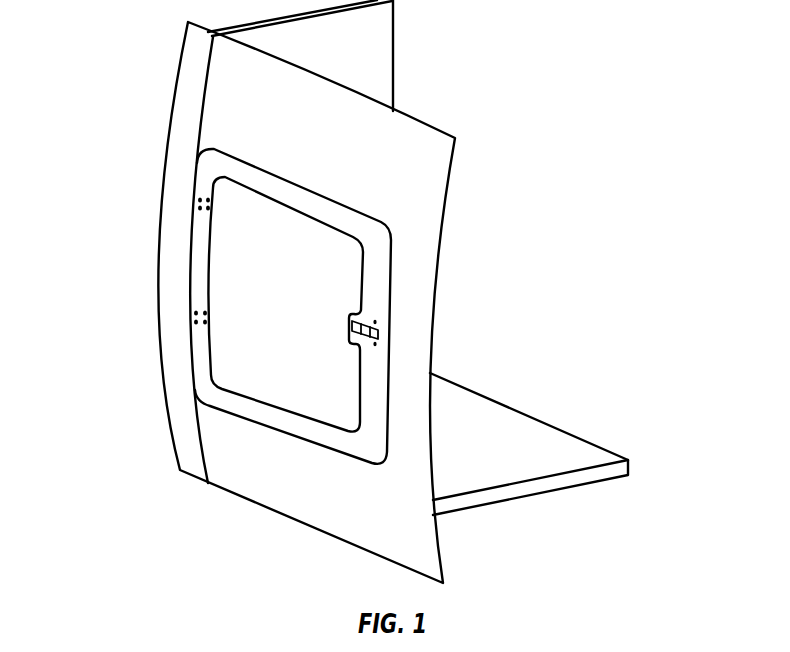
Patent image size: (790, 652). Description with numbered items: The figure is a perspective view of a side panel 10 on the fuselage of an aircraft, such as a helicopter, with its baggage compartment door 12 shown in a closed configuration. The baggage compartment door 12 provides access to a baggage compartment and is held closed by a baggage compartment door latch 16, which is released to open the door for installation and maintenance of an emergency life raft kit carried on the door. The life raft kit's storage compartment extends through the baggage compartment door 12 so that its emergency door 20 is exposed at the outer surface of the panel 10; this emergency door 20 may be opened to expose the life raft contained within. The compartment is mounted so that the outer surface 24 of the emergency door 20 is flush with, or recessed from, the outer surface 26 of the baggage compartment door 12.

The panel 10 is at (118, 88).
The baggage compartment door 12 is at (378, 267).
The baggage compartment door latch 16 is at (380, 337).
The emergency door 20 is at (340, 297).
The outer surface of emergency door 24 is at (240, 277).
The outer surface of compartment door 26 is at (378, 377).